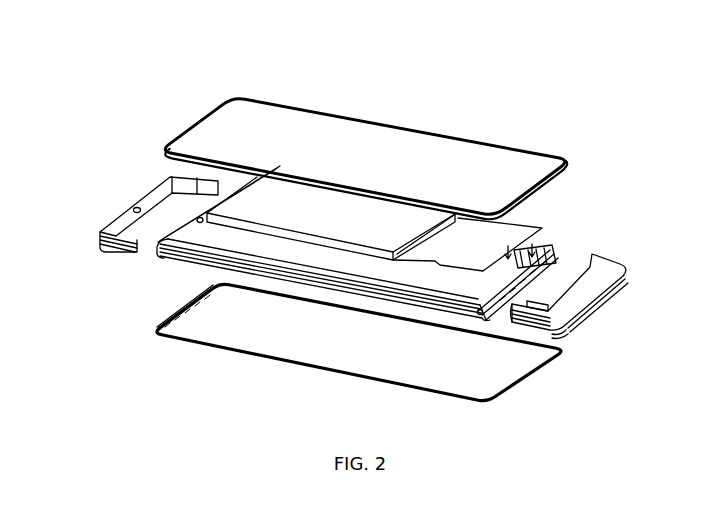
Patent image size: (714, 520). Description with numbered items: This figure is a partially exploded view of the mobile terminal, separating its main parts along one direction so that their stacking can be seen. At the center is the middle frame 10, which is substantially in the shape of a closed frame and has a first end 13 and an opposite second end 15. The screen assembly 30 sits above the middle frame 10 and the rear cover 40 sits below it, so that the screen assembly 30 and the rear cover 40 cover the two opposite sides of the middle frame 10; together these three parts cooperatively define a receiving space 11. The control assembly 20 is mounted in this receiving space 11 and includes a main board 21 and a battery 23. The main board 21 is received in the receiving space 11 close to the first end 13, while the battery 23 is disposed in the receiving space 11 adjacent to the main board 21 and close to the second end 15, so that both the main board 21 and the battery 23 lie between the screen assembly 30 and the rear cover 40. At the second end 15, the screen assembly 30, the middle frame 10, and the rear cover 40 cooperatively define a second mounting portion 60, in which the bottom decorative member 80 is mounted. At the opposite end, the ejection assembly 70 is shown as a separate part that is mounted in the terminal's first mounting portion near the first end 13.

The middle frame 10 is at (217, 268).
The receiving space 11 is at (509, 250).
The first end 13 is at (526, 282).
The second end 15 is at (198, 221).
The control assembly 20 is at (332, 50).
The main board 21 is at (442, 235).
The battery 23 is at (313, 212).
The screen assembly 30 is at (476, 152).
The rear cover 40 is at (372, 375).
The second mounting portion 60 is at (200, 197).
The ejection assembly 70 is at (571, 258).
The bottom decorative member 80 is at (103, 227).